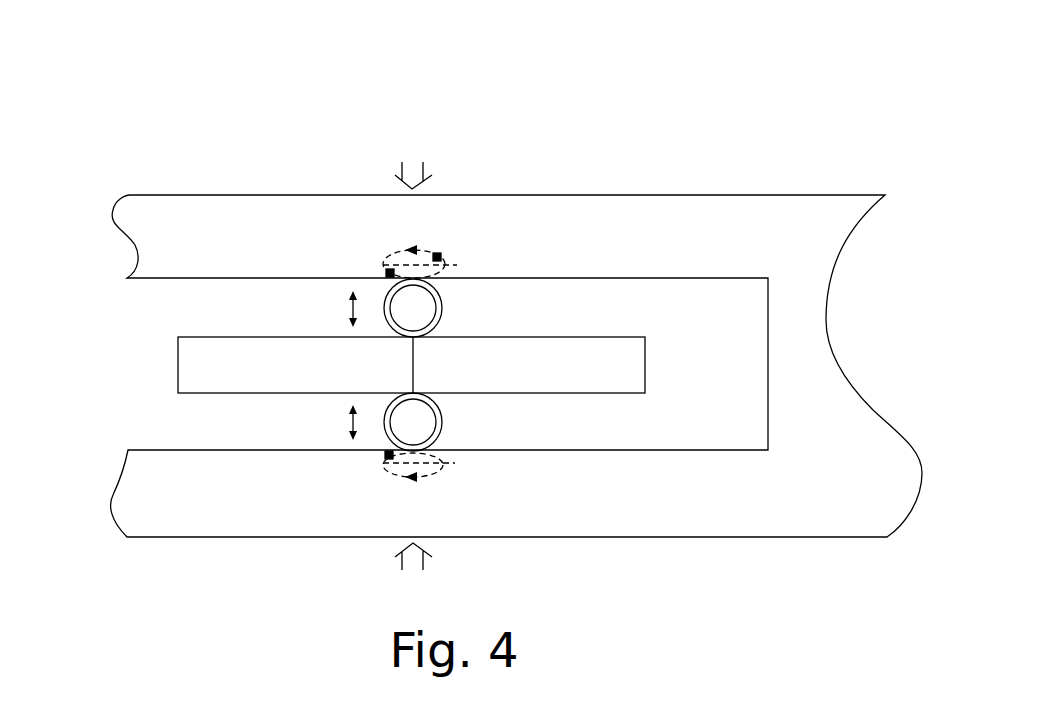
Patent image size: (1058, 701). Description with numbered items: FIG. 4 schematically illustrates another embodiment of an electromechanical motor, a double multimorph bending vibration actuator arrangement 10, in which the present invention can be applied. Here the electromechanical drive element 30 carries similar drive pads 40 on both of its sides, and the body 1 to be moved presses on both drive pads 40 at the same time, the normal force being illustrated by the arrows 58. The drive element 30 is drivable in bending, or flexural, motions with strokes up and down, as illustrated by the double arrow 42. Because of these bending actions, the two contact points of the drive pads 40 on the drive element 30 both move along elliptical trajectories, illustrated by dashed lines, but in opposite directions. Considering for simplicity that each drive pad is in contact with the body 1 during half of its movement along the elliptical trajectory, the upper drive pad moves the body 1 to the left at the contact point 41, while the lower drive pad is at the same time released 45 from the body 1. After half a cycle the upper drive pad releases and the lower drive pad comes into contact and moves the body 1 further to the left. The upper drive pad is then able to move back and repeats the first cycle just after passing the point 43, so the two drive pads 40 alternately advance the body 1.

The body to be moved 1 is at (612, 215).
The double multimorph bending vibration actuator arrangement 10 is at (228, 148).
The electromechanical drive element 30 is at (643, 345).
The drive pad 40 is at (442, 308).
The contact point 41 is at (441, 256).
The double arrow (direction of flexural motion) 42 is at (330, 365).
The point (of repeat of the first cycle) 43 is at (386, 272).
The release (of the lower drive pad from the body) 45 is at (385, 457).
The arrows illustrating the normal force 58 is at (434, 364).